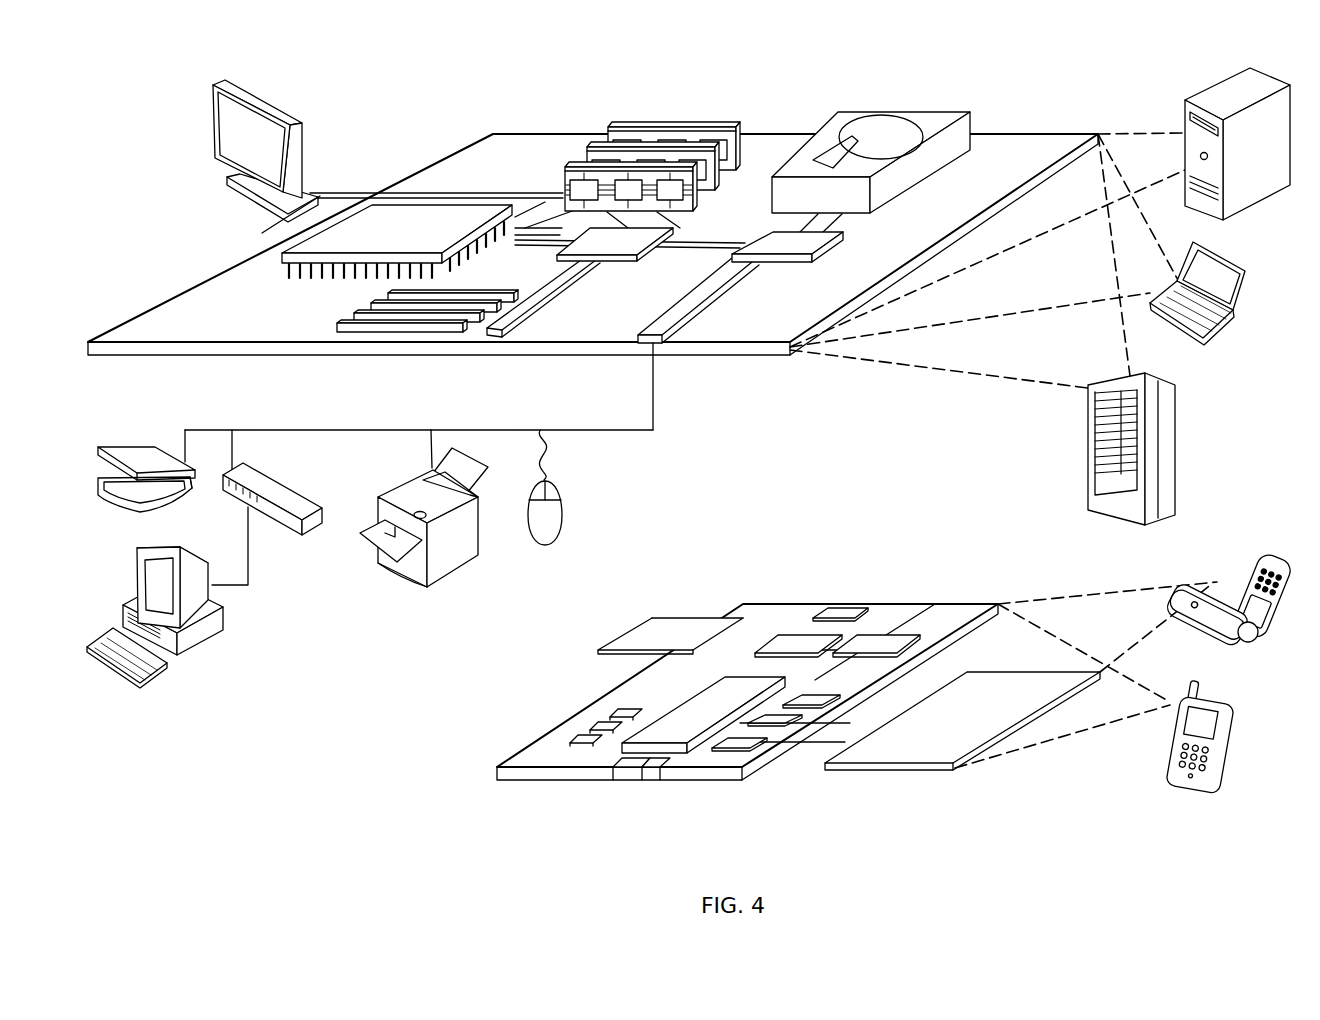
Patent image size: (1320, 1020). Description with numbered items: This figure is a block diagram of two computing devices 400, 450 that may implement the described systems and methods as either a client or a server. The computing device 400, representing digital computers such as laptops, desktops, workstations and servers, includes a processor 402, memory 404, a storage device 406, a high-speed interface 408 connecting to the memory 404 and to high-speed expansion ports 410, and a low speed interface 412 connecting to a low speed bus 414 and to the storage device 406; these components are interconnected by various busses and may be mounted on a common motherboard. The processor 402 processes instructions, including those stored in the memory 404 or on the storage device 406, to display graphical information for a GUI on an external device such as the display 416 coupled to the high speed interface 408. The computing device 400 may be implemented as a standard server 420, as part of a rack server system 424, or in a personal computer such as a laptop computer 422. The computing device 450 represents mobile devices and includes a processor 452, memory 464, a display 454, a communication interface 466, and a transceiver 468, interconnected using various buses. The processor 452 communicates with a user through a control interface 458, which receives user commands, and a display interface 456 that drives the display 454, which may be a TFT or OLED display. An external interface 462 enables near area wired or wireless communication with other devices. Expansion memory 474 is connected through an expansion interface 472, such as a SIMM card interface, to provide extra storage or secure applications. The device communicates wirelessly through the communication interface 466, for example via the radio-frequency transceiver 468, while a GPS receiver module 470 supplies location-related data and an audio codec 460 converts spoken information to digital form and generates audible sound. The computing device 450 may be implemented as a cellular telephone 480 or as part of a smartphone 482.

The computing device 400 is at (415, 108).
The processor 402 is at (292, 257).
The memory 404 is at (630, 124).
The storage device 406 is at (861, 112).
The high-speed interface 408 is at (588, 237).
The high-speed expansion ports 410 is at (366, 313).
The low speed interface 412 is at (767, 239).
The low speed bus 414 is at (660, 343).
The display 416 is at (223, 82).
The standard server 420 is at (1185, 113).
The laptop computer 422 is at (1246, 269).
The rack server system 424 is at (1088, 470).
The computing device 450 is at (469, 782).
The processor 452 is at (675, 735).
The display 454 is at (917, 755).
The display interface 456 is at (747, 742).
The control interface 458 is at (778, 720).
The audio codec 460 is at (808, 698).
The external interface 462 is at (640, 768).
The memory 464 is at (592, 733).
The communication interface 466 is at (799, 640).
The transceiver 468 is at (878, 640).
The GPS receiver module 470 is at (850, 608).
The expansion interface 472 is at (725, 616).
The expansion memory 474 is at (652, 618).
The cellular telephone 480 is at (1229, 564).
The smartphone 482 is at (1174, 736).